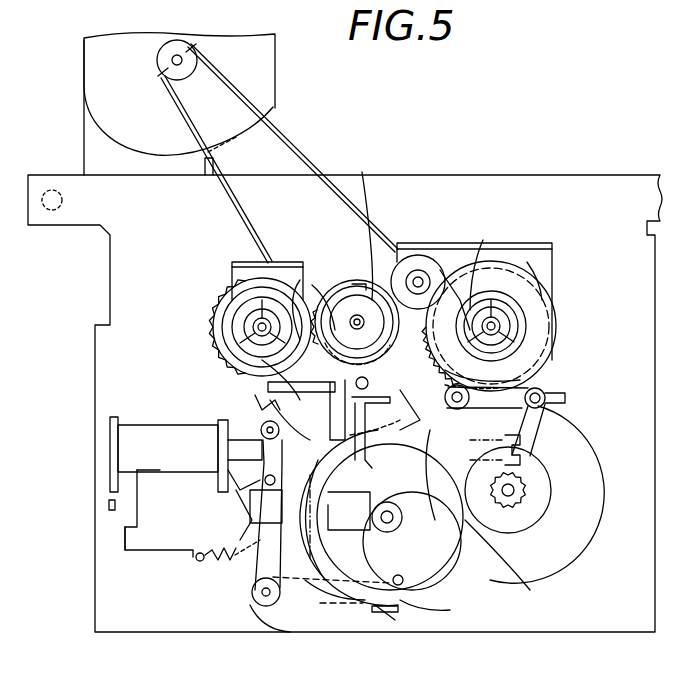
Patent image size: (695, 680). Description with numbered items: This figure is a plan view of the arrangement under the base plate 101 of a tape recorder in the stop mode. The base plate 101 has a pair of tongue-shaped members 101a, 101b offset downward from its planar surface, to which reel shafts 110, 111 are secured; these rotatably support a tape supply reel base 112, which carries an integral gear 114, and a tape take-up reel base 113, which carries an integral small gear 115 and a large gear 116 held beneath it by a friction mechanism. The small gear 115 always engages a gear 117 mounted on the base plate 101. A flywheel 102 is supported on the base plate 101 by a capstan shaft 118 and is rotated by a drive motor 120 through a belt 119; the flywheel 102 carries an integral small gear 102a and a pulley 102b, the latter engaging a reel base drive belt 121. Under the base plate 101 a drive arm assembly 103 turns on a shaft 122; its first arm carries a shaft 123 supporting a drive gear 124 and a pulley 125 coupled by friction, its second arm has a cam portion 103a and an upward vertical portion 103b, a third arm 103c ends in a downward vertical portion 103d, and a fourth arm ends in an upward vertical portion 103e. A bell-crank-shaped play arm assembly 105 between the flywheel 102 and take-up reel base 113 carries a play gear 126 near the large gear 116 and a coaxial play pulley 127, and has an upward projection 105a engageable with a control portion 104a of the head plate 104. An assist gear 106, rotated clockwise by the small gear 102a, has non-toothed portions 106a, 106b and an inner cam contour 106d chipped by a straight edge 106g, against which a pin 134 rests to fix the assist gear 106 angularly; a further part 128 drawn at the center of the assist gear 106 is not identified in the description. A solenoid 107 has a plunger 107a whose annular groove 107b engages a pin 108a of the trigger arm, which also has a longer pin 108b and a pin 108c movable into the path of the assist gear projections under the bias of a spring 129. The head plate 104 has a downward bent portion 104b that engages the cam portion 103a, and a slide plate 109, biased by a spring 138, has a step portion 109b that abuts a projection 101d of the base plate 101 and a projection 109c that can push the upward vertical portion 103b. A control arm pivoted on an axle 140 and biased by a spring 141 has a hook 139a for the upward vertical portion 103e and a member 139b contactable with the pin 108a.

The base plate 101 is at (585, 176).
The tongue-shaped member 101a is at (240, 282).
The tongue-shaped member 101b is at (540, 252).
The projection 101d is at (109, 505).
The flywheel 102 is at (575, 560).
The small gear 102a is at (522, 496).
The pulley 102b is at (542, 508).
The drive arm assembly 103 is at (347, 286).
The cam portion 103a is at (335, 440).
The upward vertical portion 103b is at (283, 605).
The third arm 103c is at (483, 377).
The downward vertical portion 103d is at (370, 440).
The upward vertical portion 103e is at (262, 360).
The head plate 104 is at (252, 600).
The control portion 104a is at (540, 412).
The downward bent portion 104b is at (250, 628).
The play arm assembly 105 is at (546, 390).
The upward projection 105a is at (522, 440).
The assist gear 106 is at (472, 612).
The non-toothed portion 106a is at (510, 580).
The non-toothed portion 106b is at (368, 602).
The inner cam contour 106d is at (412, 468).
The straight edge 106g is at (397, 575).
The solenoid 107 is at (145, 415).
The plunger 107a is at (258, 428).
The annular groove 107b is at (235, 450).
The pin 108a is at (226, 480).
The pin 108b is at (237, 492).
The pin 108c is at (402, 618).
The slide plate 109 is at (145, 462).
The step portion 109b is at (128, 532).
The projection 109c is at (318, 602).
The reel shaft 110 is at (235, 308).
The reel shaft 111 is at (491, 300).
The tape supply reel base 112 is at (248, 318).
The tape take-up reel base 113 is at (502, 306).
The gear 114 is at (224, 300).
The small gear 115 is at (527, 262).
The large gear 116 is at (550, 312).
The gear 117 is at (421, 270).
The capstan shaft 118 is at (515, 488).
The belt 119 is at (292, 144).
The drive motor 120 is at (264, 75).
The reel base drive belt 121 is at (460, 262).
The shaft 122 is at (361, 377).
The shaft 123 is at (360, 226).
The drive gear 124 is at (330, 282).
The pulley 125 is at (305, 276).
The play gear 126 is at (528, 352).
The play pulley 127 is at (483, 240).
The shaft 128 is at (380, 530).
The spring 129 is at (452, 630).
The pin 134 is at (450, 613).
The spring 138 is at (215, 572).
The hook 139a is at (265, 385).
The member 139b is at (228, 603).
The axle 140 is at (248, 405).
The spring 141 is at (272, 418).